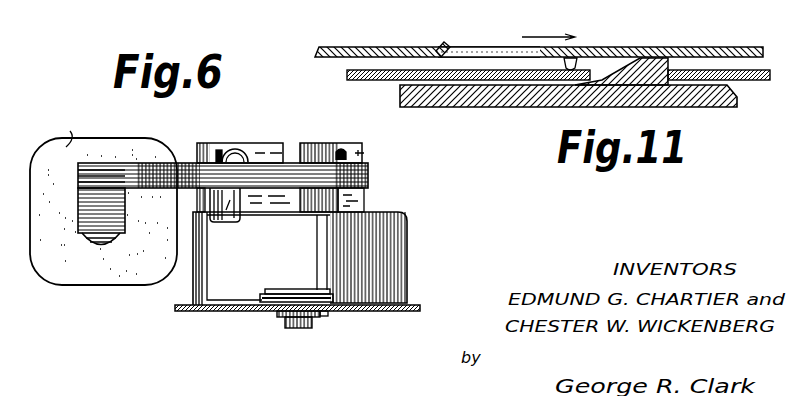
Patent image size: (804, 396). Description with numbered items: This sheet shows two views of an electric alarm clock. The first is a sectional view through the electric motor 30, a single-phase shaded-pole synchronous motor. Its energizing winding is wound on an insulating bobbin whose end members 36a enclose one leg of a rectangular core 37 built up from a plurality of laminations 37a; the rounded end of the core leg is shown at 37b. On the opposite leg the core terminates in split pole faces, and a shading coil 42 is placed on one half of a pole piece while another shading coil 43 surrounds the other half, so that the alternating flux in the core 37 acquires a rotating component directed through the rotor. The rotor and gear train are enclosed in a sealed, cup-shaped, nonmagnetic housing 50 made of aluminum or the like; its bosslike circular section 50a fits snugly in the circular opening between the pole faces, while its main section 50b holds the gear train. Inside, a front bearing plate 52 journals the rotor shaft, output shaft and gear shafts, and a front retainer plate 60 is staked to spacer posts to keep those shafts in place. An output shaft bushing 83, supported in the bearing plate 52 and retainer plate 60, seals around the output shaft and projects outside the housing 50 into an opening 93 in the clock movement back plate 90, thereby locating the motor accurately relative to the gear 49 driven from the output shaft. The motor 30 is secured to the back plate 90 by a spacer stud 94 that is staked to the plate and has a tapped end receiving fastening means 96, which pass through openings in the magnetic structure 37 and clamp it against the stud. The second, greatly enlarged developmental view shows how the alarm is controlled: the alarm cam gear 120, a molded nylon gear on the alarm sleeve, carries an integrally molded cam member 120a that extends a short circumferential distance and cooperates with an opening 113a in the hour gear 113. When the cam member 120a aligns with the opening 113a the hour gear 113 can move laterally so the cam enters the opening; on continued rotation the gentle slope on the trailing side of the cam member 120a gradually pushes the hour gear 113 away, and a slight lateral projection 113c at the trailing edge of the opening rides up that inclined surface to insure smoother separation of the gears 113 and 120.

In FIG. 6, the electric motor 30 is at (128, 321).
In FIG. 6, the end member of bobbin 36a is at (57, 130).
In FIG. 6, the rectangular core 37 is at (183, 163).
In FIG. 6, the laminations 37a is at (78, 206).
In FIG. 6, the armature bar rounded end 37b is at (82, 232).
In FIG. 6, the fastening means 96 is at (212, 160).
In FIG. 6, the shading coil 42 is at (282, 130).
In FIG. 6, the bosslike circular section 50a is at (315, 157).
In FIG. 6, the shading coil 43 is at (362, 153).
In FIG. 6, the rotor and gear housing 50 is at (443, 200).
In FIG. 6, the main section of housing 50b is at (390, 257).
In FIG. 6, the spacer stud 94 is at (240, 220).
In FIG. 6, the front retainer plate 60 is at (262, 297).
In FIG. 6, the front bearing plate 52 is at (300, 277).
In FIG. 6, the back plate 90 is at (208, 312).
In FIG. 6, the output shaft bushing 83 is at (280, 315).
In FIG. 6, the opening 93 is at (323, 317).
In FIG. 6, the gear 49 is at (295, 329).
In FIG. 11, the hour gear 113 is at (760, 50).
In FIG. 11, the opening 113a is at (477, 48).
In FIG. 11, the lateral projection 113c is at (441, 45).
In FIG. 11, the cam member 120a is at (648, 60).
In FIG. 11, the alarm cam gear 120 is at (716, 108).